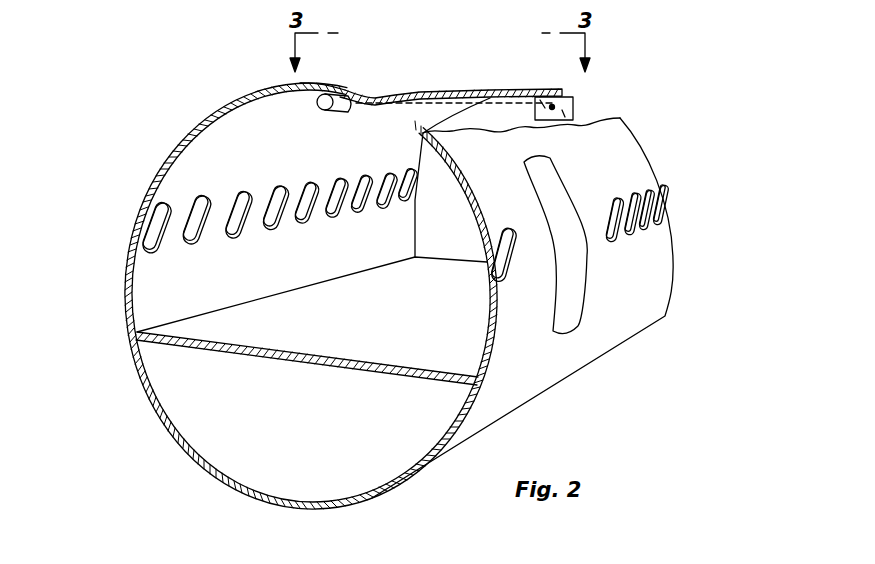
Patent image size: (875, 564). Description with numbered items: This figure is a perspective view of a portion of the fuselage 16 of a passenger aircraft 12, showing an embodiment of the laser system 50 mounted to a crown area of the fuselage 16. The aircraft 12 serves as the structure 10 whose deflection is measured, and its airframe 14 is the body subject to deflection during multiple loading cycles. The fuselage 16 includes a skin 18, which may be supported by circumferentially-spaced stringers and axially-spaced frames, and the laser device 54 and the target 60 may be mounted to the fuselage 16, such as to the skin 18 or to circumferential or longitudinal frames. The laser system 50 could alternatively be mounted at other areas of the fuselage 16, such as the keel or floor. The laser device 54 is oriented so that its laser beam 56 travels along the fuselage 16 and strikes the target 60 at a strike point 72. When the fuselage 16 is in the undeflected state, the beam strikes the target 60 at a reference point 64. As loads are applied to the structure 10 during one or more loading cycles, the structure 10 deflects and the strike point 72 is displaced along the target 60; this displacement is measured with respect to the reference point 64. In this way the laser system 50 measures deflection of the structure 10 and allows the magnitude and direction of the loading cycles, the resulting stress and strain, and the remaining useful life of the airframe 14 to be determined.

The structure 10 is at (495, 270).
The aircraft 12 is at (745, 116).
The airframe 14 is at (167, 152).
The fuselage 16 is at (219, 106).
The skin 18 is at (272, 87).
The laser system 50 is at (570, 80).
The laser device 54 is at (323, 110).
The laser beam 56 is at (408, 104).
The target 60 is at (576, 98).
The reference point 64 is at (576, 108).
The strike point 72 is at (552, 108).